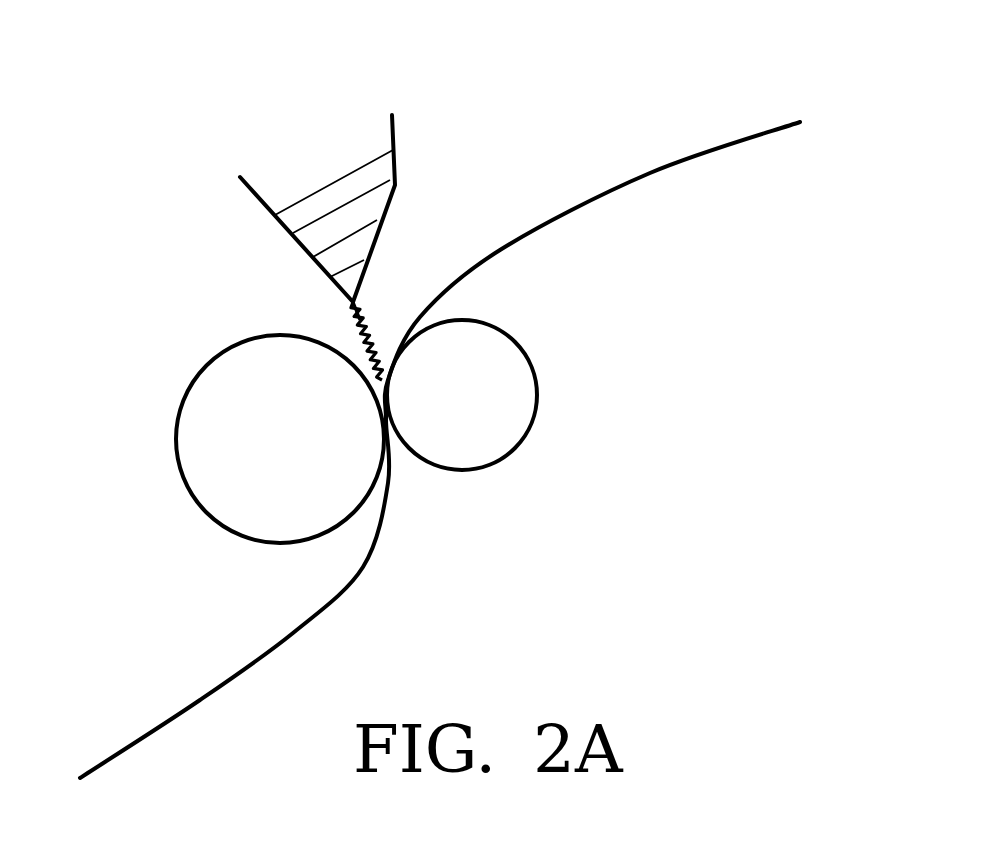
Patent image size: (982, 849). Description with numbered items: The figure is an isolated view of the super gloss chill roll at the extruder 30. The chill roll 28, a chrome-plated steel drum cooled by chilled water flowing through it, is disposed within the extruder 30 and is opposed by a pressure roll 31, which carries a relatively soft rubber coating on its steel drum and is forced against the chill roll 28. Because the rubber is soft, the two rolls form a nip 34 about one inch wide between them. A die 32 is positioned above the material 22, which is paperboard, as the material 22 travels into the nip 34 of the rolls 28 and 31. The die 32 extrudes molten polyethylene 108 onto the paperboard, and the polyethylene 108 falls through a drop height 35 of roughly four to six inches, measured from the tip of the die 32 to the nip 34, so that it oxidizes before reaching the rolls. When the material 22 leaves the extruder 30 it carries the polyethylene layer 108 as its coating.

The material 22 is at (728, 132).
The super gloss chill roll 28 is at (260, 473).
The extruder 30 is at (277, 206).
The pressure roll 31 is at (513, 413).
The die 32 is at (395, 182).
The nip 34 is at (387, 450).
The drop height 35 is at (360, 354).
The polyethylene 108 is at (380, 313).